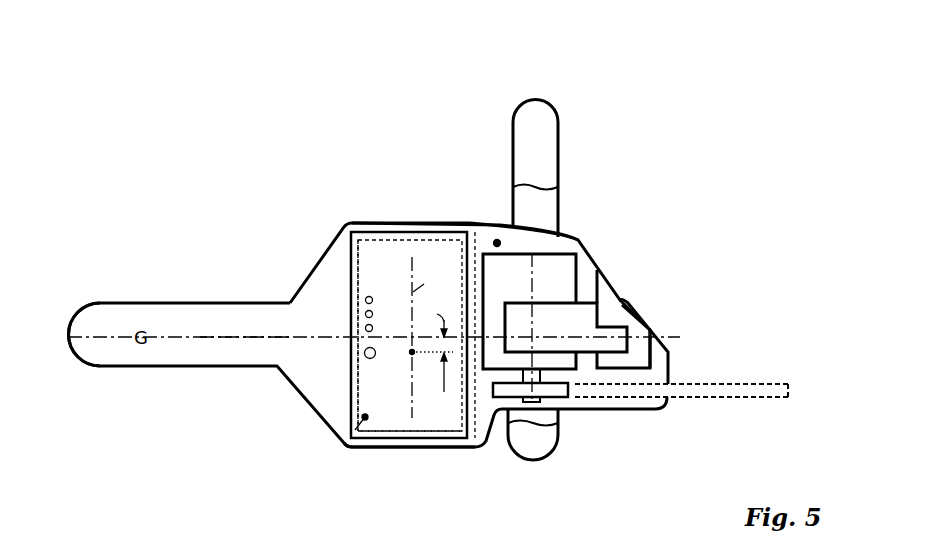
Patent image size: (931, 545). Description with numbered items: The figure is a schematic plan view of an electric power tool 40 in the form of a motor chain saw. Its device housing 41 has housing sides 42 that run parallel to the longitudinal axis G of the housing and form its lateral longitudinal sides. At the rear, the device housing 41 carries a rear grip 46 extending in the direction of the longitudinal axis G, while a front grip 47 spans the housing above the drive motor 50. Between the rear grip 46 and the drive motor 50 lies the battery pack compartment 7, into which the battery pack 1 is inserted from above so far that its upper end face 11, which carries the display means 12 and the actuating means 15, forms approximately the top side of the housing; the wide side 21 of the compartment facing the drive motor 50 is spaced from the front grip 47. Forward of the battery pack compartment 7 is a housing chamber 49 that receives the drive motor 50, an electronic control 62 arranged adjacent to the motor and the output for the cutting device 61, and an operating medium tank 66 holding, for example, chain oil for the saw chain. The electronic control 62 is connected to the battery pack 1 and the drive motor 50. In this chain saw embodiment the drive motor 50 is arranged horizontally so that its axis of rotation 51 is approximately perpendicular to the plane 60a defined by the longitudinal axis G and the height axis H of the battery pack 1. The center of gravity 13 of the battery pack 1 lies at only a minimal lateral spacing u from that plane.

The power tool 40 is at (228, 172).
The device housing 41 is at (497, 228).
The housing sides 42 is at (375, 223).
The battery pack 1 is at (408, 240).
The battery pack compartment 7 is at (415, 440).
The upper end face 11 is at (347, 447).
The display means 12 is at (352, 310).
The center of gravity 13 is at (411, 354).
The actuating means 15 is at (366, 360).
The wide side 21 is at (352, 262).
The rear grip 46 is at (125, 355).
The front grip 47 is at (541, 115).
The housing chamber 49 is at (497, 243).
The drive motor 50 is at (566, 283).
The axis of rotation 51 is at (533, 253).
The plane 60a is at (278, 340).
The cutting device 61 is at (718, 384).
The electronic control 62 is at (580, 318).
The operating medium tank 66 is at (652, 322).